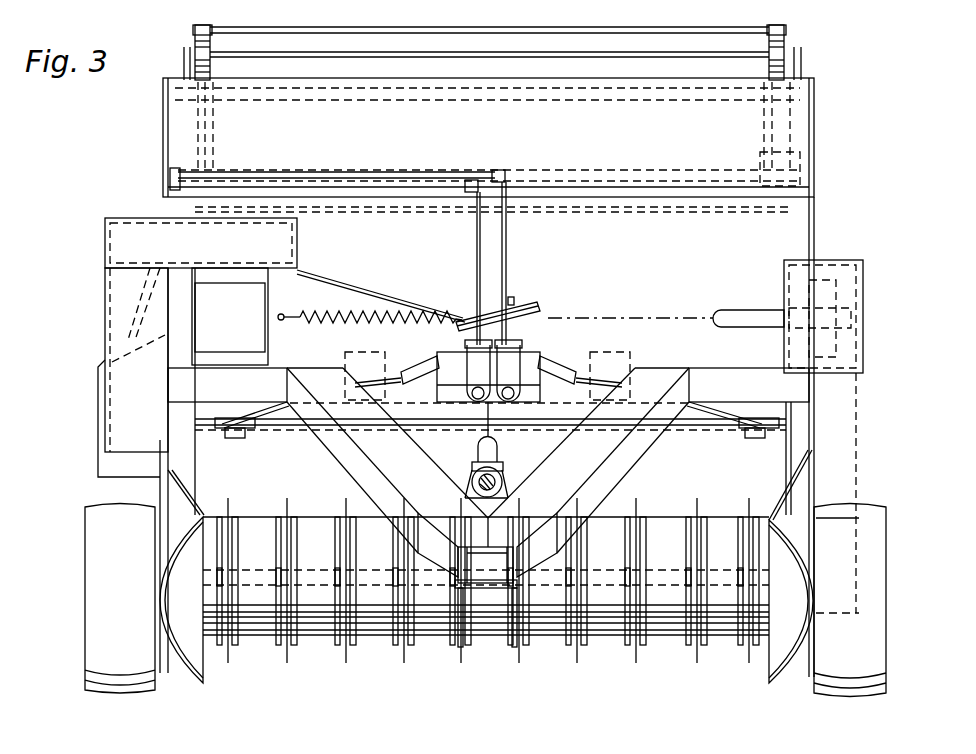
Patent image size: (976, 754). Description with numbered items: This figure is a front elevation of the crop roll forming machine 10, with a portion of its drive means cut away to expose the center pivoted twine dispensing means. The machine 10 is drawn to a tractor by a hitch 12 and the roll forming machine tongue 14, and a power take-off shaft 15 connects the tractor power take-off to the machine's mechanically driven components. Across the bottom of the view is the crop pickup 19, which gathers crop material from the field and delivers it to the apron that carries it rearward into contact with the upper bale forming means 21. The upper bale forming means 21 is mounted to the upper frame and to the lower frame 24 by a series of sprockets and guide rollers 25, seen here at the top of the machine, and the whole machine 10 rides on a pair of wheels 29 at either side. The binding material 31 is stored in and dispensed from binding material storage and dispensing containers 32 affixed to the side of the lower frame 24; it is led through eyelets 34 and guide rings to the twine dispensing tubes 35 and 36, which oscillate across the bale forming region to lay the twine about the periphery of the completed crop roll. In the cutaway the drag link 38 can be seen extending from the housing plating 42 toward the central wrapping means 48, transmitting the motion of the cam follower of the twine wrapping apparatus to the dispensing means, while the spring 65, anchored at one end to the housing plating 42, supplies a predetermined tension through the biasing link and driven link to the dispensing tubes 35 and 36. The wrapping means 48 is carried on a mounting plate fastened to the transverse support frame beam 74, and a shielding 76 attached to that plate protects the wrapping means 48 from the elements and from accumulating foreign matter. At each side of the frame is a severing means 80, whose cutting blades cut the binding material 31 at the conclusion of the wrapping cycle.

The crop roll forming machine 10 is at (845, 108).
The hitch 12 is at (500, 588).
The roll forming machine tongue 14 is at (360, 477).
The power take-off shaft 15 is at (498, 448).
The crop pickup 19 is at (323, 665).
The upper bale forming means 21 is at (262, 20).
The lower frame 24 is at (836, 250).
The sprockets and guide rollers 25 is at (195, 30).
The wheels 29 is at (85, 580).
The binding material 31 is at (320, 171).
The binding material storage and dispensing containers 32 is at (105, 297).
The eyelets 34 is at (172, 168).
The twine dispensing tube 35 is at (390, 372).
The twine dispensing tube 36 is at (580, 372).
The drag link 38 is at (345, 281).
The housing plating 42 is at (298, 238).
The wrapping means 48 is at (527, 298).
The spring 65 is at (350, 326).
The transverse support frame beam 74 is at (630, 318).
The shielding 76 is at (492, 749).
The severing means 80 is at (224, 445).